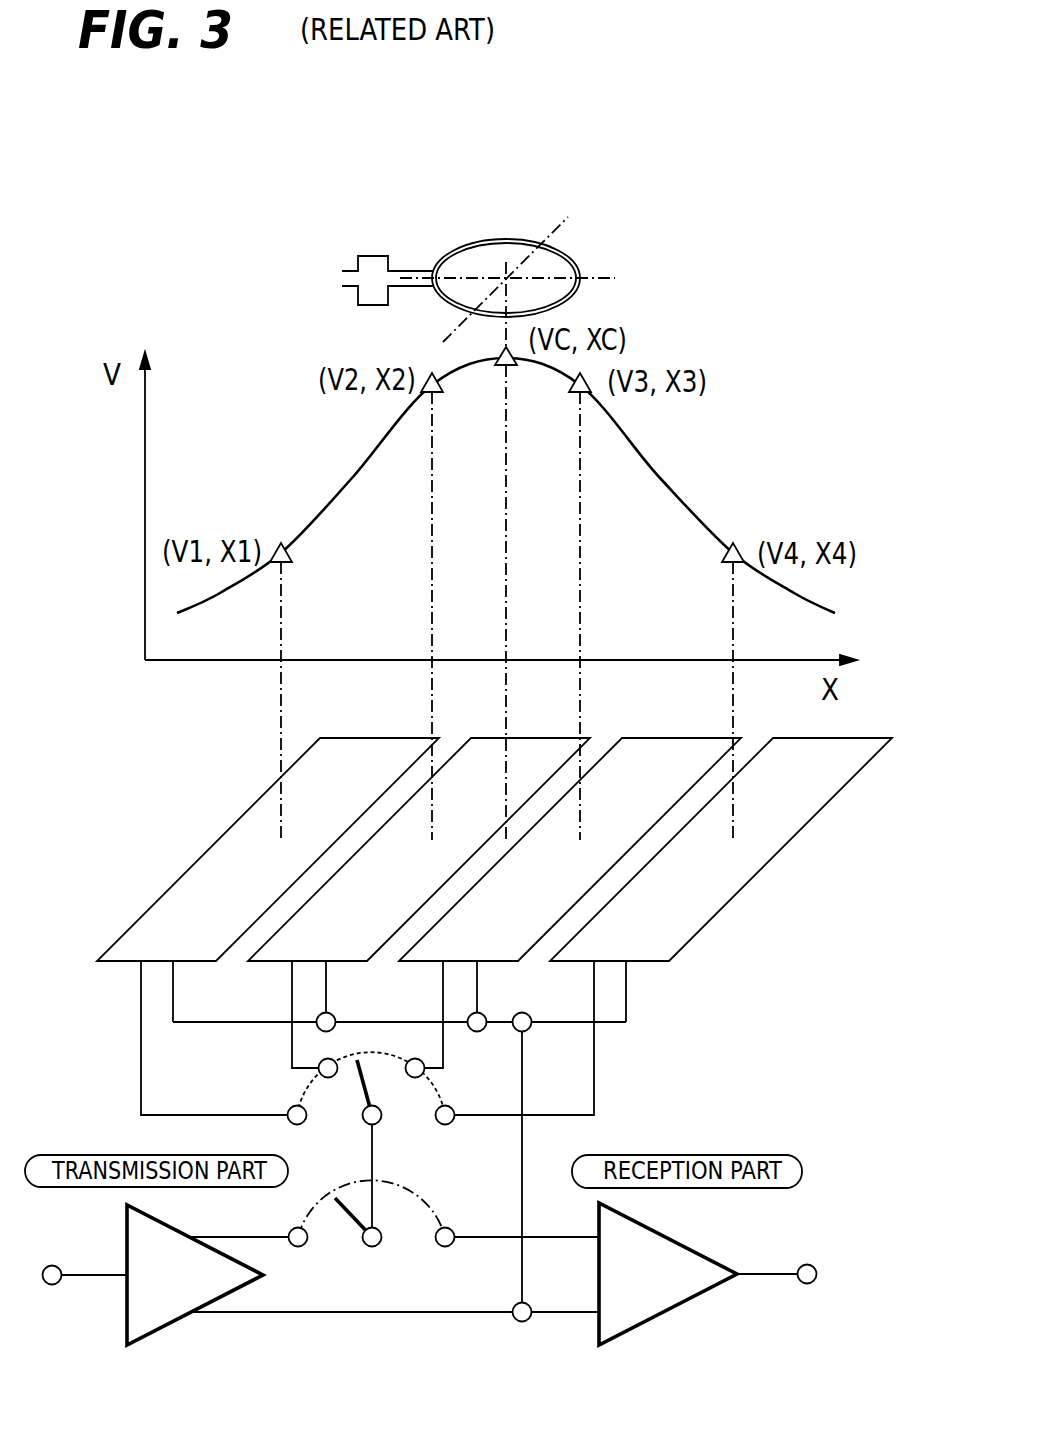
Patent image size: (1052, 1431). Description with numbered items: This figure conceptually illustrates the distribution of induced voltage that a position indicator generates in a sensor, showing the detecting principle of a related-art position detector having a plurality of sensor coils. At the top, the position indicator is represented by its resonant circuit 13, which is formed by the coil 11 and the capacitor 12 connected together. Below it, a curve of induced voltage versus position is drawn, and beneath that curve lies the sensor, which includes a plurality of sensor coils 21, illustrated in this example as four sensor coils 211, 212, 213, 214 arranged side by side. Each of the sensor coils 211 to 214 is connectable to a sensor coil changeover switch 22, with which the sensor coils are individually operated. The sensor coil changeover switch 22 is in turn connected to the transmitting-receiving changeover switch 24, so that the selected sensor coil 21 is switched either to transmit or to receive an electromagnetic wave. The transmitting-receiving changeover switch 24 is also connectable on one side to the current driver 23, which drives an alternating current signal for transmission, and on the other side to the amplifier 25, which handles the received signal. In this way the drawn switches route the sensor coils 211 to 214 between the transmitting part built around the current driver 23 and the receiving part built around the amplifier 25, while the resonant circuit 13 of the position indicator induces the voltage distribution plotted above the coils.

The coil 11 is at (572, 258).
The capacitor 12 is at (350, 265).
The resonant circuit 13 is at (438, 225).
The sensor coil 21 is at (165, 755).
The sensor coil 211 is at (222, 838).
The sensor coil 212 is at (392, 928).
The sensor coil 213 is at (641, 832).
The sensor coil 214 is at (745, 882).
The sensor coil changeover switch 22 is at (275, 1128).
The current driver 23 is at (127, 1240).
The transmitting-receiving changeover switch 24 is at (300, 1193).
The amplifier 25 is at (680, 1243).